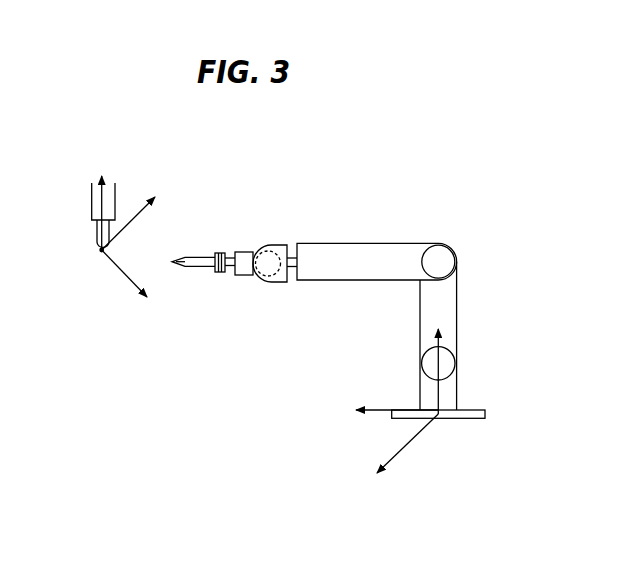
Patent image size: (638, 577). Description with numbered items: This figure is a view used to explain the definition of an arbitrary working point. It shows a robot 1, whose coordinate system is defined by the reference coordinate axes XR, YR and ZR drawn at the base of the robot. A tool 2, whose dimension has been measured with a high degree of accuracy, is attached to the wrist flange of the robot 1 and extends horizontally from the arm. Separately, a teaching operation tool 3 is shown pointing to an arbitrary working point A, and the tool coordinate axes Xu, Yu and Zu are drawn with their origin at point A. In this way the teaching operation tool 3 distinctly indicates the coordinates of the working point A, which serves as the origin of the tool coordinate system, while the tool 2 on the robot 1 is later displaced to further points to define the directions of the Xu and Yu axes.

The robot 1 is at (458, 295).
The tool 2 is at (205, 257).
The teaching operation tool 3 is at (92, 203).